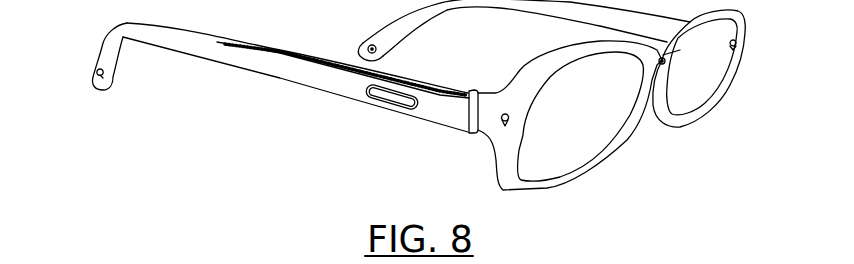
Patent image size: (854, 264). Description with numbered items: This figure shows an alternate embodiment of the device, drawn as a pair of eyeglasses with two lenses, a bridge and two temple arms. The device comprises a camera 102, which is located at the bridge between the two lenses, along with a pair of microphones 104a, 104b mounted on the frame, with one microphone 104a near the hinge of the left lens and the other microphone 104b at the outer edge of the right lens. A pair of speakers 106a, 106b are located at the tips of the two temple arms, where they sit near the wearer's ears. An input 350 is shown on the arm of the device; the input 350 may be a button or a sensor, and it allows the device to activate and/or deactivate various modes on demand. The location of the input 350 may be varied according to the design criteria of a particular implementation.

The camera 102 is at (658, 63).
The microphone 104a is at (505, 128).
The microphone 104b is at (738, 44).
The speaker 106a is at (102, 82).
The speaker 106b is at (366, 40).
The input 350 is at (396, 106).